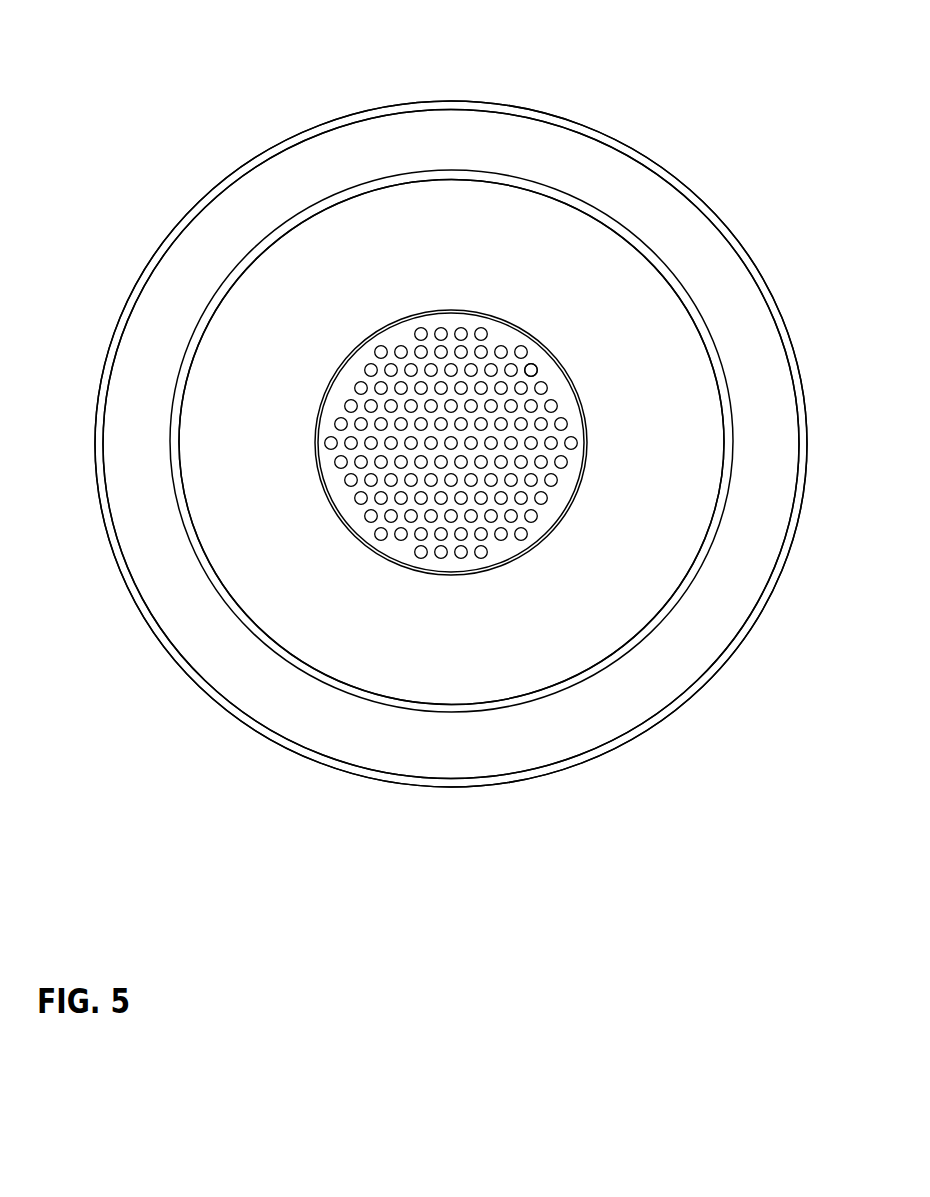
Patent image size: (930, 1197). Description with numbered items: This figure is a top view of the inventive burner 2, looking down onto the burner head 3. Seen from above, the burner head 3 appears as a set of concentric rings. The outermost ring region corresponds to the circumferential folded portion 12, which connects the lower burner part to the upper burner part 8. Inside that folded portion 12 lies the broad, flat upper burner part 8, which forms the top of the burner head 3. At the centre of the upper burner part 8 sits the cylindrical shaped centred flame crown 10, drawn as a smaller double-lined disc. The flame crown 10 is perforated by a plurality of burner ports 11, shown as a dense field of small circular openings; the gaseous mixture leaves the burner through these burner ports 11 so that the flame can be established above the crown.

The aerosol-generating article 2 is at (337, 74).
The burner head 3 is at (222, 177).
The upper burner part 8 is at (424, 275).
The flame crown 10 is at (502, 333).
The burner ports 11 is at (525, 373).
The circumferential folded portion 12 is at (513, 157).